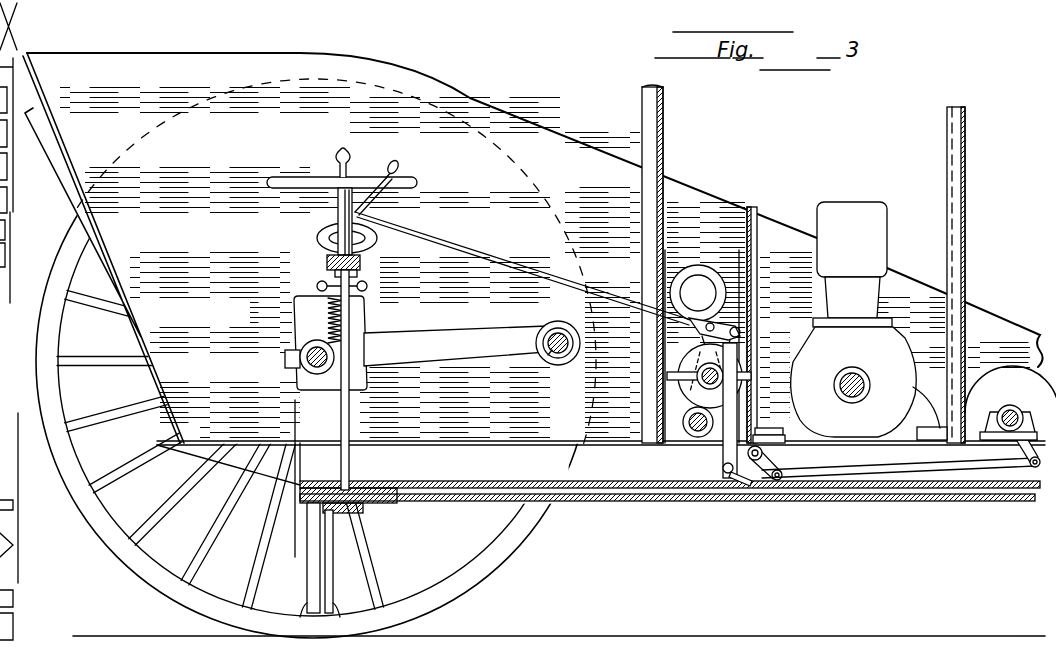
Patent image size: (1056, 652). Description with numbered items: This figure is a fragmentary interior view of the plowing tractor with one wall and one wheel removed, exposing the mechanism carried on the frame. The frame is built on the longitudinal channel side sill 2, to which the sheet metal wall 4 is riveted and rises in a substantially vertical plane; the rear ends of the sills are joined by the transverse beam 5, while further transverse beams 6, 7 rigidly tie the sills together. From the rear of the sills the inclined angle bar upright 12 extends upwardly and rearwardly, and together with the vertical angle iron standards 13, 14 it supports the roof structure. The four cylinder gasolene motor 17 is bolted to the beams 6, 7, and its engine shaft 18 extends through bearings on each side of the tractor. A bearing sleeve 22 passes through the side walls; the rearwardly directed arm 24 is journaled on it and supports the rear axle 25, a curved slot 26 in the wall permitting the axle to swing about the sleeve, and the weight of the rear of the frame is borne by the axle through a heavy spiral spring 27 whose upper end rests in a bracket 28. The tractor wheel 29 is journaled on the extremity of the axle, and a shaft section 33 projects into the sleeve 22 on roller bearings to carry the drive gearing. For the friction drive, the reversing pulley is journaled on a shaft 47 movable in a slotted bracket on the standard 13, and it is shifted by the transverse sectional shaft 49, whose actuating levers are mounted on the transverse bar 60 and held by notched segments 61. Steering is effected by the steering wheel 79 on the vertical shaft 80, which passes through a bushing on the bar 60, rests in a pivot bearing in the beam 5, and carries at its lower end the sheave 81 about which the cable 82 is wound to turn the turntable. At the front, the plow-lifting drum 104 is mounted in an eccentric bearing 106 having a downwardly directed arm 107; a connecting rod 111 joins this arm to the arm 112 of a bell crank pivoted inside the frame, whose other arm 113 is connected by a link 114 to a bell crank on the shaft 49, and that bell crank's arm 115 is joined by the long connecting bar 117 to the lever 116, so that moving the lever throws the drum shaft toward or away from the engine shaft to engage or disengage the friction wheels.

The longitudinal channel side sill 2 is at (465, 462).
The sheet metal wall 4 is at (573, 150).
The transverse beam 5 is at (323, 560).
The transverse beam 6 is at (768, 433).
The transverse beam 7 is at (927, 440).
The inclined angle bar upright 12 is at (143, 347).
The vertical angle iron standard 13 is at (651, 150).
The vertical angle iron standard 14 is at (753, 217).
The four cylinder gasolene motor 17 is at (876, 232).
The engine shaft 18 is at (852, 367).
The bearing sleeve 22 is at (580, 345).
The arm 24 is at (455, 346).
The rear axle 25 is at (309, 368).
The curved slot 26 is at (330, 343).
The spiral spring 27 is at (349, 327).
The bracket 28 is at (317, 288).
The tractor wheel 29 is at (43, 383).
The shaft section 33 is at (548, 364).
The shaft 47 is at (694, 432).
The sectional shaft 49 is at (677, 379).
The transverse bar 60 is at (328, 256).
The notched segment 61 is at (358, 270).
The steering wheel 79 is at (413, 182).
The vertical shaft 80 is at (346, 412).
The sheave 81 is at (364, 490).
The cable 82 is at (584, 500).
The drum 104 is at (1001, 415).
The eccentric bearing 106 is at (1010, 405).
The downwardly directed arm 107 is at (1015, 473).
The connecting rod 111 is at (957, 465).
The bell crank arm 112 is at (770, 458).
The bell crank arm 113 is at (742, 482).
The link 114 is at (722, 441).
The bell crank arm 115 is at (741, 338).
The lever 116 is at (378, 198).
The long connecting bar 117 is at (489, 257).